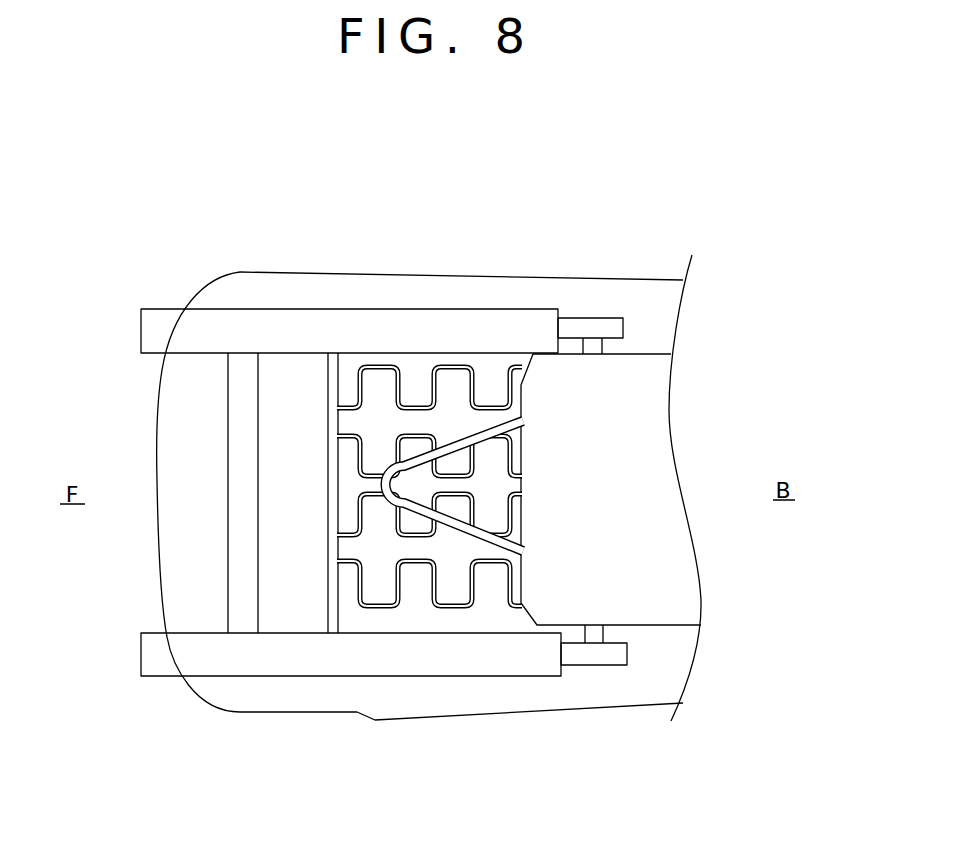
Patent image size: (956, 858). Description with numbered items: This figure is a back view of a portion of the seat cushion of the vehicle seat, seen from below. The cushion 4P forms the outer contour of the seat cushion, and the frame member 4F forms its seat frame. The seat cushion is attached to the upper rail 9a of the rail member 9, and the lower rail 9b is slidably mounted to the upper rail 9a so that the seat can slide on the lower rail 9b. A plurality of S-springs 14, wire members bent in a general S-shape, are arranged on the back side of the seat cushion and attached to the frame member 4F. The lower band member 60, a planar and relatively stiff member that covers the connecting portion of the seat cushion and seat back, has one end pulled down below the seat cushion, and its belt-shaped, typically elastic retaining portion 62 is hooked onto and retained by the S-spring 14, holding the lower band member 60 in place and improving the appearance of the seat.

The cushion 4P is at (428, 268).
The frame member 4F is at (280, 503).
The rail member 9 is at (410, 500).
The upper rail 9a is at (545, 323).
The lower rail 9b is at (568, 333).
The S-spring 14 is at (512, 382).
The lower band member 60 is at (557, 422).
The retaining portion 62 is at (507, 540).